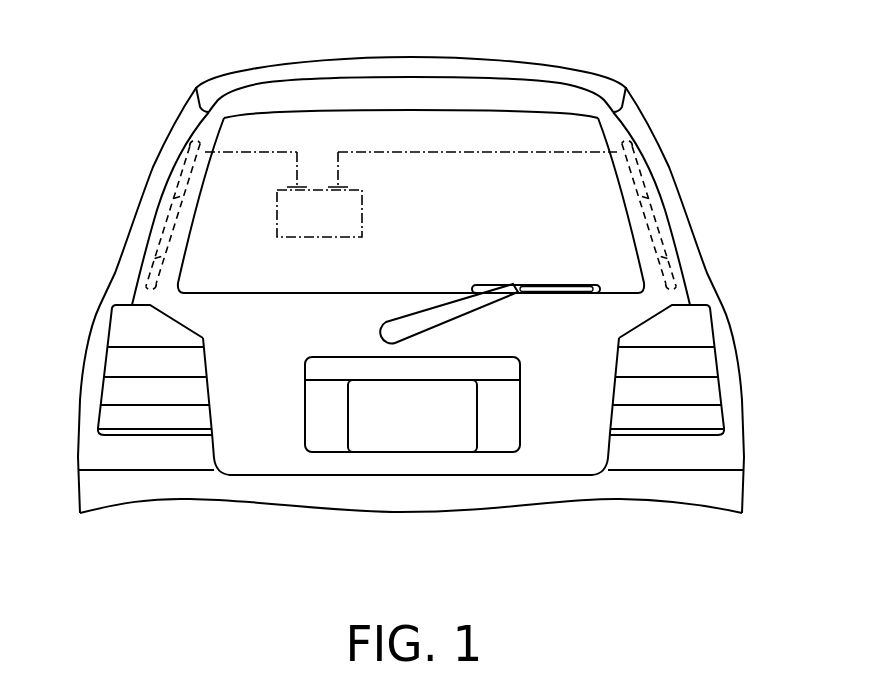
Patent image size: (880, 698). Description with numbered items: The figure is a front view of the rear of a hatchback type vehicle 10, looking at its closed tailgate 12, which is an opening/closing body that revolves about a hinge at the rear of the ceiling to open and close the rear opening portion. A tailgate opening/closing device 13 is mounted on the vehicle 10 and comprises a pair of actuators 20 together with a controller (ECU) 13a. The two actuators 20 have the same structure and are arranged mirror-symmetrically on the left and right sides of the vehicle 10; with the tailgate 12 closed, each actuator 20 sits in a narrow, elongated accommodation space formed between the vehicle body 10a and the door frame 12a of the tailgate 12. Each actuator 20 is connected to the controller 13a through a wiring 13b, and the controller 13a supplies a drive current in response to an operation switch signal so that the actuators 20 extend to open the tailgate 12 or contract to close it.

The vehicle 10 is at (157, 87).
The vehicle body 10a is at (673, 452).
The tailgate 12 is at (257, 408).
The door frame 12a is at (160, 218).
The tailgate opening/closing device 13 is at (466, 143).
The controller (ECU) 13a is at (320, 187).
The wiring 13b is at (538, 151).
The actuator 20 is at (167, 191).